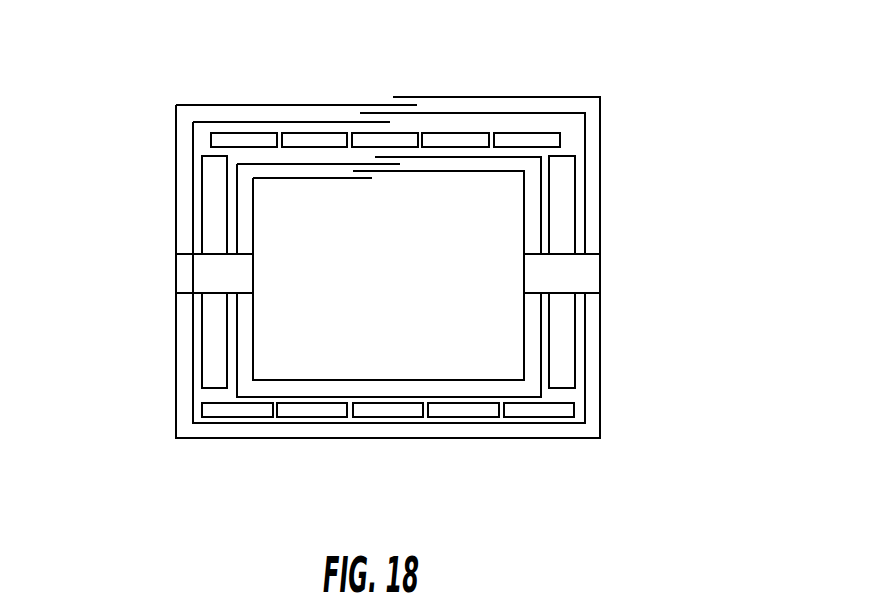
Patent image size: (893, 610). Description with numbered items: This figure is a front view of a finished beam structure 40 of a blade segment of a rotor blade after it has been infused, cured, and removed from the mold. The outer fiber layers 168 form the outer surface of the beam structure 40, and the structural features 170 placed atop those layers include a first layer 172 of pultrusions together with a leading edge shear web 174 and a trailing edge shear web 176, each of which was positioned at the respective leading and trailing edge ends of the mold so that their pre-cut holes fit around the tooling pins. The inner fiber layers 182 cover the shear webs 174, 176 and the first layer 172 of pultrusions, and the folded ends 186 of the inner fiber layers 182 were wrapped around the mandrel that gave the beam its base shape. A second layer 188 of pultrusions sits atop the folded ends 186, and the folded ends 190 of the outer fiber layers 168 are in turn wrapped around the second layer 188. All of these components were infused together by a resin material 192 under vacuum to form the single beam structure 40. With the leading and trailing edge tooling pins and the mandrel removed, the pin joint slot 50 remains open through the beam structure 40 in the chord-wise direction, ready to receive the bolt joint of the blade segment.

The beam structure 40 is at (708, 200).
The pin joint slot 50 is at (212, 272).
The outer fiber layers 168 is at (192, 226).
The structural features 170 is at (481, 130).
The first layer of pultrusions 172 is at (544, 418).
The leading edge shear web 174 is at (215, 333).
The trailing edge shear web 176 is at (563, 343).
The inner fiber layers 182 is at (413, 382).
The folded ends of the inner fiber layers 186 is at (470, 172).
The second layer of pultrusions 188 is at (288, 132).
The folded ends of the outer fiber layers 190 is at (338, 122).
The resin material 192 is at (207, 395).